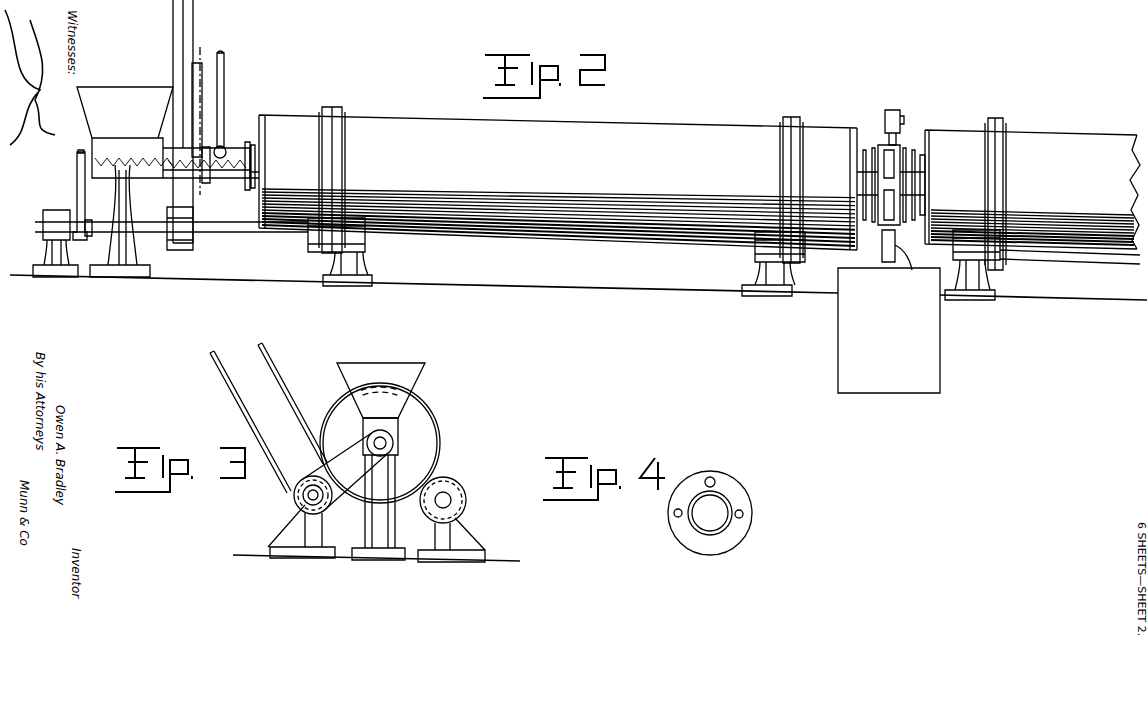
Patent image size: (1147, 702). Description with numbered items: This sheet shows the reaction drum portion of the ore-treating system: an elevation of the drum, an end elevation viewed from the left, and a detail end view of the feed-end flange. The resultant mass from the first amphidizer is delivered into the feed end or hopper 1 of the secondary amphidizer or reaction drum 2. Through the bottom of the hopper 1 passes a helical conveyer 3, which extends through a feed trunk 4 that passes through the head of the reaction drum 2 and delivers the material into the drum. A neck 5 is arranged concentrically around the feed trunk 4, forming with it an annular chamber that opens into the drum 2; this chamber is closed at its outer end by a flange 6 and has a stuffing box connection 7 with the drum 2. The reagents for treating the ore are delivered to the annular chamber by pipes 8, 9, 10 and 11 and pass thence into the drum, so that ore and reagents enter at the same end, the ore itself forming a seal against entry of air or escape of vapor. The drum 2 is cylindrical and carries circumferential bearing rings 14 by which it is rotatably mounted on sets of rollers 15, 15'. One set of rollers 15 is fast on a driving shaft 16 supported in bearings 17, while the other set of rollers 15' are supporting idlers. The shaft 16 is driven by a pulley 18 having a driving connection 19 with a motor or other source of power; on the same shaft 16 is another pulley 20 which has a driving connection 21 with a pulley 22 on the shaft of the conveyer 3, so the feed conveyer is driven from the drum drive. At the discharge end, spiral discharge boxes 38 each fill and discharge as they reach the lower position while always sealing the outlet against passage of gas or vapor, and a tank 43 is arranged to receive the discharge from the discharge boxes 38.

In FIG. 2, the hopper 1 is at (128, 93).
In FIG. 2, the reaction drum 2 is at (438, 120).
In FIG. 3, the reaction drum 2 is at (380, 443).
In FIG. 3, the conveyer 3 is at (380, 430).
In FIG. 2, the feed trunk 4 is at (202, 50).
In FIG. 2, the neck 5 is at (242, 178).
In FIG. 2, the flange 6 is at (206, 184).
In FIG. 4, the flange 6 is at (702, 548).
In FIG. 4, the stuffing box connection 7 is at (710, 513).
In FIG. 4, the pipe 8 is at (712, 477).
In FIG. 2, the pipe 9 is at (192, 77).
In FIG. 4, the pipe 9 is at (743, 512).
In FIG. 4, the pipe 10 is at (674, 514).
In FIG. 2, the pipe 11 is at (222, 90).
In FIG. 2, the circumferential bearing rings 14 is at (330, 107).
In FIG. 2, the rollers 15 is at (641, 248).
In FIG. 3, the idler rollers 15' is at (451, 509).
In FIG. 2, the driving shaft 16 is at (587, 243).
In FIG. 3, the driving shaft 16 is at (308, 498).
In FIG. 2, the bearings 17 is at (66, 246).
In FIG. 2, the pulley 18 is at (190, 250).
In FIG. 2, the driving connection 19 is at (173, 16).
In FIG. 3, the driving connection 19 is at (250, 420).
In FIG. 2, the pulley 20 is at (90, 220).
In FIG. 3, the pulley 20 is at (294, 495).
In FIG. 2, the driving connection 21 is at (77, 186).
In FIG. 3, the driving connection 21 is at (354, 448).
In FIG. 2, the pulley 22 is at (78, 158).
In FIG. 2, the spiral discharge boxes 38 is at (891, 110).
In FIG. 2, the tank 43 is at (889, 330).